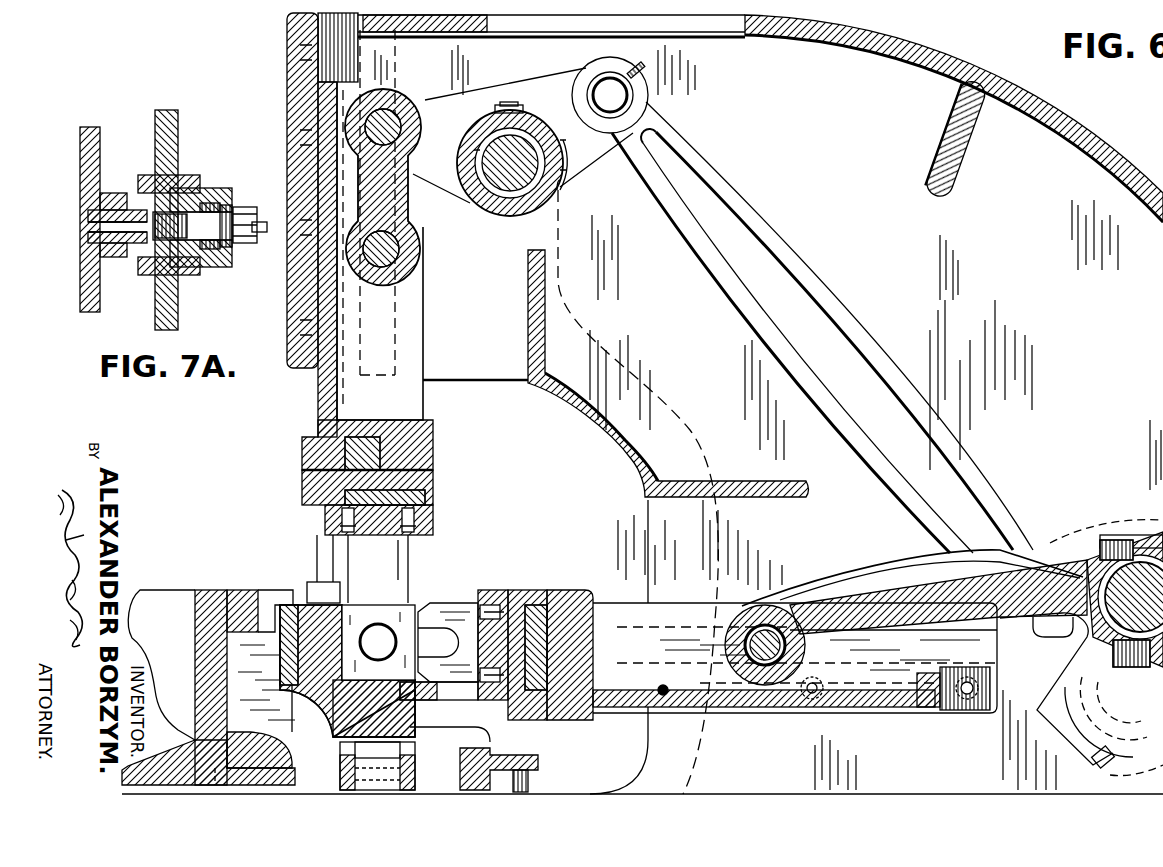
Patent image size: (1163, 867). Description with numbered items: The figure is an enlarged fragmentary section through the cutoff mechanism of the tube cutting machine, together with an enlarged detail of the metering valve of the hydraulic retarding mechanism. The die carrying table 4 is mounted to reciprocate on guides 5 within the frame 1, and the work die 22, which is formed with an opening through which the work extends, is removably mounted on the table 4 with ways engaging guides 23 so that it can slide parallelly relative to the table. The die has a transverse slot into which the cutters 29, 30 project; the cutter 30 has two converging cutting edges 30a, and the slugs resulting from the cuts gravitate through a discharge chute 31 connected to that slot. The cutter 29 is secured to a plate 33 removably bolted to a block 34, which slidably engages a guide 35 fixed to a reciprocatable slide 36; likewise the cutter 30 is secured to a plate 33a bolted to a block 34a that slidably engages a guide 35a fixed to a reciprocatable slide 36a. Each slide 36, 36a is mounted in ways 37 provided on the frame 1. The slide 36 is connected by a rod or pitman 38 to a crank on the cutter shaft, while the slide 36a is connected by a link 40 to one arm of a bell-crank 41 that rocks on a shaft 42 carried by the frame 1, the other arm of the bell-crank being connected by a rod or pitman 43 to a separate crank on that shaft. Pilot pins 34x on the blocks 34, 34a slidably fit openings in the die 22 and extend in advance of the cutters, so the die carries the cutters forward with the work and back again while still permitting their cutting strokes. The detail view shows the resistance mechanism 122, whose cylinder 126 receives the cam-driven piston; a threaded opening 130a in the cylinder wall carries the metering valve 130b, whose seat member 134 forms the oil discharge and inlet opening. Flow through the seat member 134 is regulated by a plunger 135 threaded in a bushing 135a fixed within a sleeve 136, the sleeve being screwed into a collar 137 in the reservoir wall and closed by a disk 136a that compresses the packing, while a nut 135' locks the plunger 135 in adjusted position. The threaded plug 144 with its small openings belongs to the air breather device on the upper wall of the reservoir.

In FIG. 6, the frame 1 is at (574, 430).
In FIG. 6, the die carrying table 4 is at (490, 746).
In FIG. 6, the guides 5 is at (248, 590).
In FIG. 6, the work die 22 is at (409, 600).
In FIG. 6, the guides 23 is at (286, 580).
In FIG. 6, the cutter 29 is at (457, 603).
In FIG. 6, the cutter 30 is at (404, 560).
In FIG. 6, the converging cutting edges 30a is at (378, 598).
In FIG. 6, the discharge chute 31 is at (296, 728).
In FIG. 6, the plate 33 is at (497, 590).
In FIG. 6, the plate 33a is at (433, 520).
In FIG. 6, the block 34 is at (523, 590).
In FIG. 6, the block 34a is at (433, 487).
In FIG. 6, the pilot pins 34x is at (318, 536).
In FIG. 6, the guide 35 is at (549, 600).
In FIG. 6, the guide 35a is at (332, 462).
In FIG. 6, the reciprocatable slide 36 is at (633, 708).
In FIG. 6, the reciprocatable slide 36a is at (318, 385).
In FIG. 6, the ways 37 is at (288, 92).
In FIG. 6, the rod or pitman 38 is at (878, 578).
In FIG. 6, the link 40 is at (402, 204).
In FIG. 6, the bell-crank 41 is at (592, 147).
In FIG. 6, the shaft 42 is at (511, 215).
In FIG. 6, the rod or pitman 43 is at (726, 270).
In FIG. 6, the threaded plug 144 is at (1073, 541).
In FIG. 7A, the resistance mechanism 122 is at (183, 124).
In FIG. 7A, the cylinder 126 is at (82, 286).
In FIG. 7A, the threaded opening 130a is at (88, 214).
In FIG. 7A, the metering valve 130b is at (215, 268).
In FIG. 7A, the seat member 134 is at (90, 228).
In FIG. 7A, the plunger 135 is at (259, 211).
In FIG. 7A, the nut 135' is at (273, 238).
In FIG. 7A, the bushing 135a is at (155, 214).
In FIG. 7A, the sleeve 136 is at (222, 200).
In FIG. 7A, the disk 136a is at (232, 205).
In FIG. 7A, the collar 137 is at (148, 276).